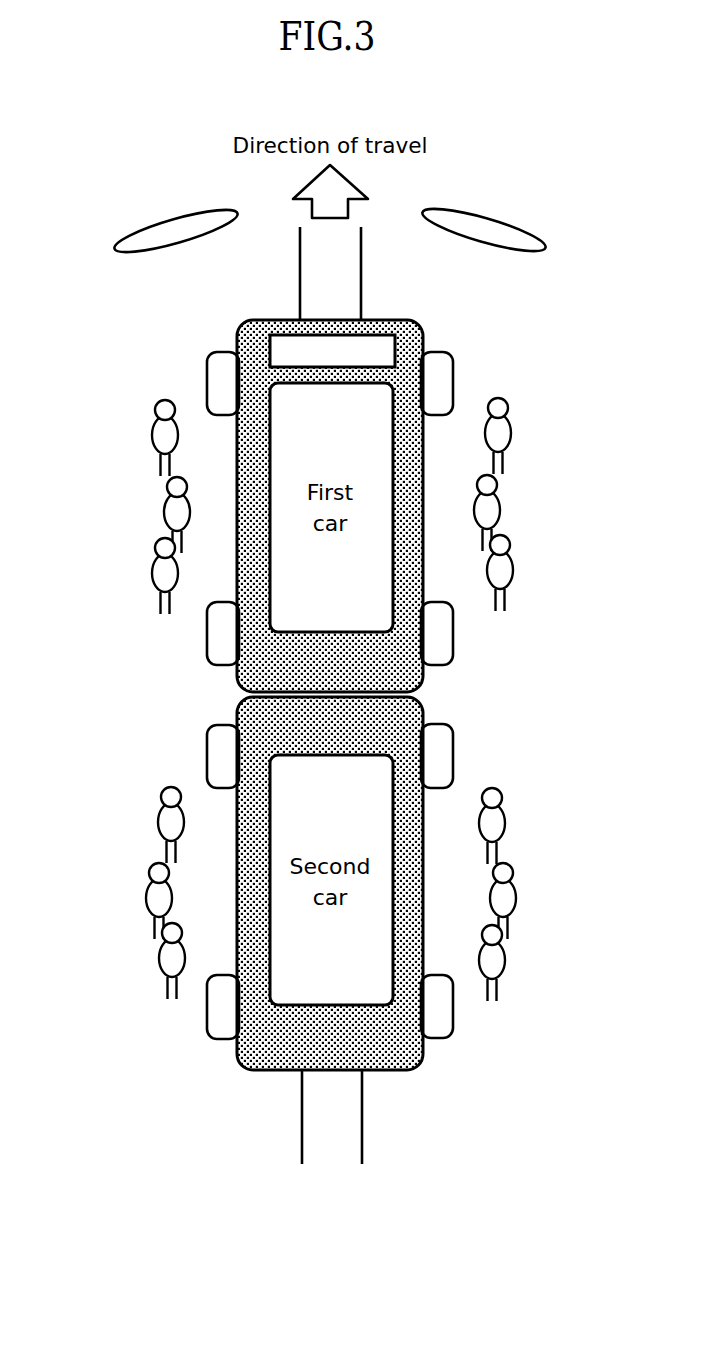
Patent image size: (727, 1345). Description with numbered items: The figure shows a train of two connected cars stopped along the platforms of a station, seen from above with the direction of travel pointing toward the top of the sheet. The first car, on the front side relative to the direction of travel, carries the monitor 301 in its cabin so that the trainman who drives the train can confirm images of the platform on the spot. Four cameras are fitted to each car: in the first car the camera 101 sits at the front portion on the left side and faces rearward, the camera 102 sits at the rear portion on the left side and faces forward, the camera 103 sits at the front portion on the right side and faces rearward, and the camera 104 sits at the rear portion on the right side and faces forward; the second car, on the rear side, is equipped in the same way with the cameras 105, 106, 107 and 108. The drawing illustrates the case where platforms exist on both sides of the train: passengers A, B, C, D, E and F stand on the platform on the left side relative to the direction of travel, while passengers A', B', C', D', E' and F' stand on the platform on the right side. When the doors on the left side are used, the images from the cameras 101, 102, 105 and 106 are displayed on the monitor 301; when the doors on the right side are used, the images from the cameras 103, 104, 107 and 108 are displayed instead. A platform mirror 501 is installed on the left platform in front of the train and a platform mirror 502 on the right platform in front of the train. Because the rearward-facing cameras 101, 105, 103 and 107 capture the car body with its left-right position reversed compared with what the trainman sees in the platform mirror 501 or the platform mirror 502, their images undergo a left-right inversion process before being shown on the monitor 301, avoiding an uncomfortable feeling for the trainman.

The platform mirror 501 is at (150, 222).
The platform mirror 502 is at (525, 217).
The monitor 301 is at (376, 335).
The camera 101 is at (206, 372).
The camera 102 is at (207, 645).
The camera 103 is at (453, 372).
The camera 104 is at (453, 645).
The camera 105 is at (207, 748).
The camera 106 is at (208, 1018).
The camera 107 is at (453, 748).
The camera 108 is at (453, 1018).
The passenger A is at (132, 429).
The passenger B is at (139, 502).
The passenger C is at (133, 567).
The passenger A' is at (532, 427).
The passenger B' is at (526, 501).
The passenger C' is at (533, 566).
The passenger D is at (135, 814).
The passenger E is at (130, 890).
The passenger F is at (137, 951).
The passenger D' is at (530, 814).
The passenger E' is at (534, 887).
The passenger F' is at (528, 950).